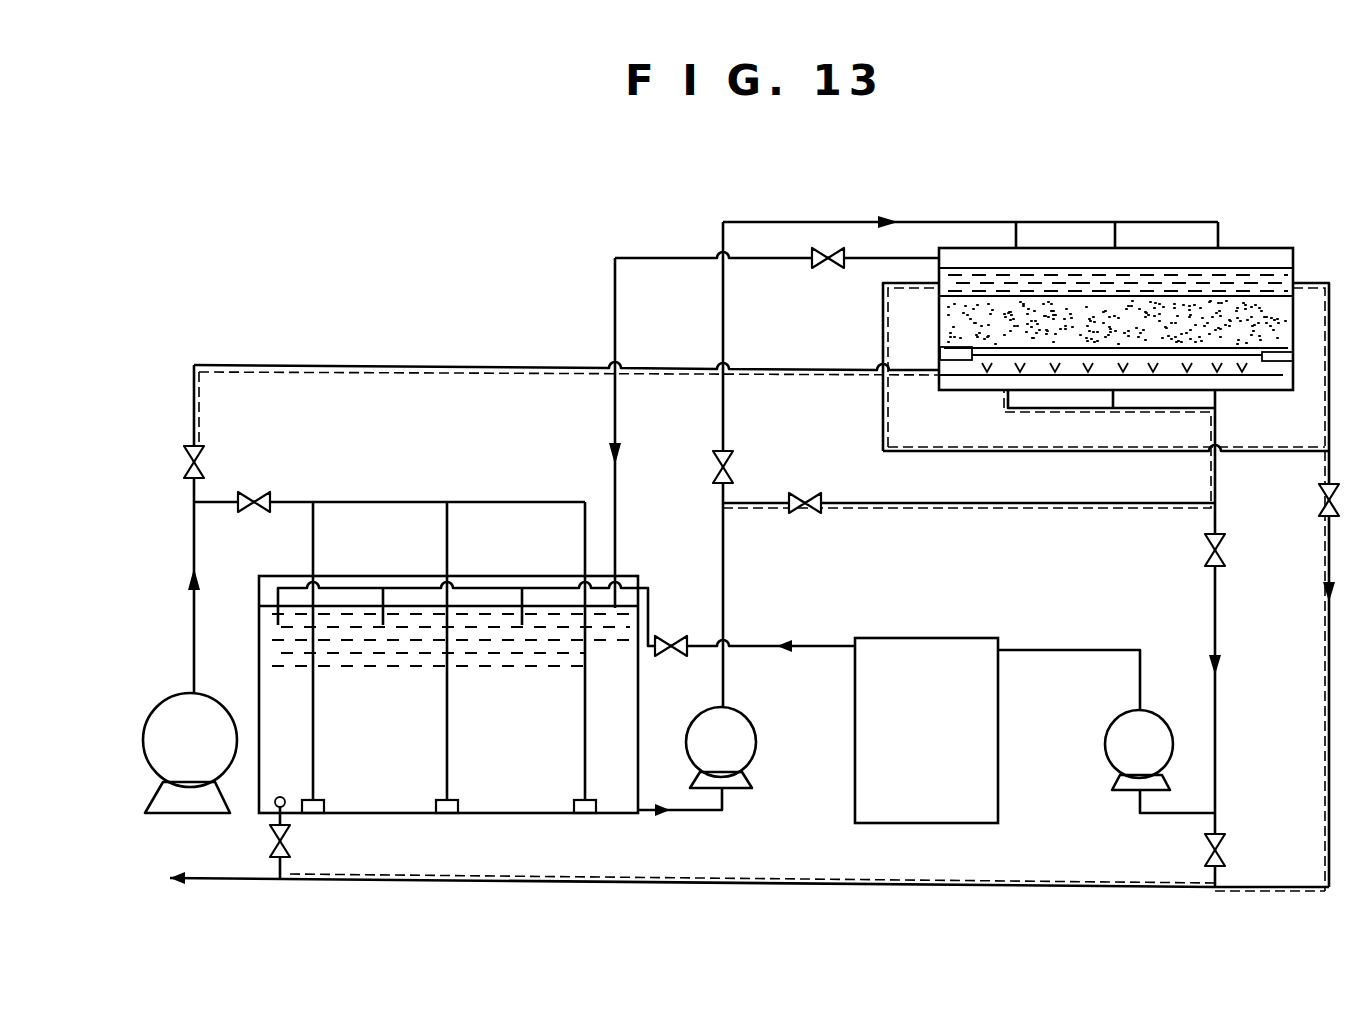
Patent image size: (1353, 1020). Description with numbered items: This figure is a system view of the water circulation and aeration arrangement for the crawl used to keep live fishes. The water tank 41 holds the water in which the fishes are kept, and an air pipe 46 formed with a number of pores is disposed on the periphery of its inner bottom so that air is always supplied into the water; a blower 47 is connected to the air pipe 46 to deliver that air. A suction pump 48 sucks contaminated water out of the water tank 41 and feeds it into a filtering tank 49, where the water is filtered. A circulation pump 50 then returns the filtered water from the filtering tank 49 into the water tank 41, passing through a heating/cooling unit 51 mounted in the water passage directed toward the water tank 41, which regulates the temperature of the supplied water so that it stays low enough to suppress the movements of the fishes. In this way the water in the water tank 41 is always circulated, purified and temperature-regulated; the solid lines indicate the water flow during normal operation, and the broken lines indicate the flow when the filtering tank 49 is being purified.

The water tank 41 is at (531, 795).
The air pipe 46 is at (317, 817).
The blower 47 is at (170, 715).
The suction pump 48 is at (742, 730).
The filtering tank 49 is at (1260, 262).
The circulation pump 50 is at (1115, 752).
The heating/cooling unit 51 is at (952, 648).